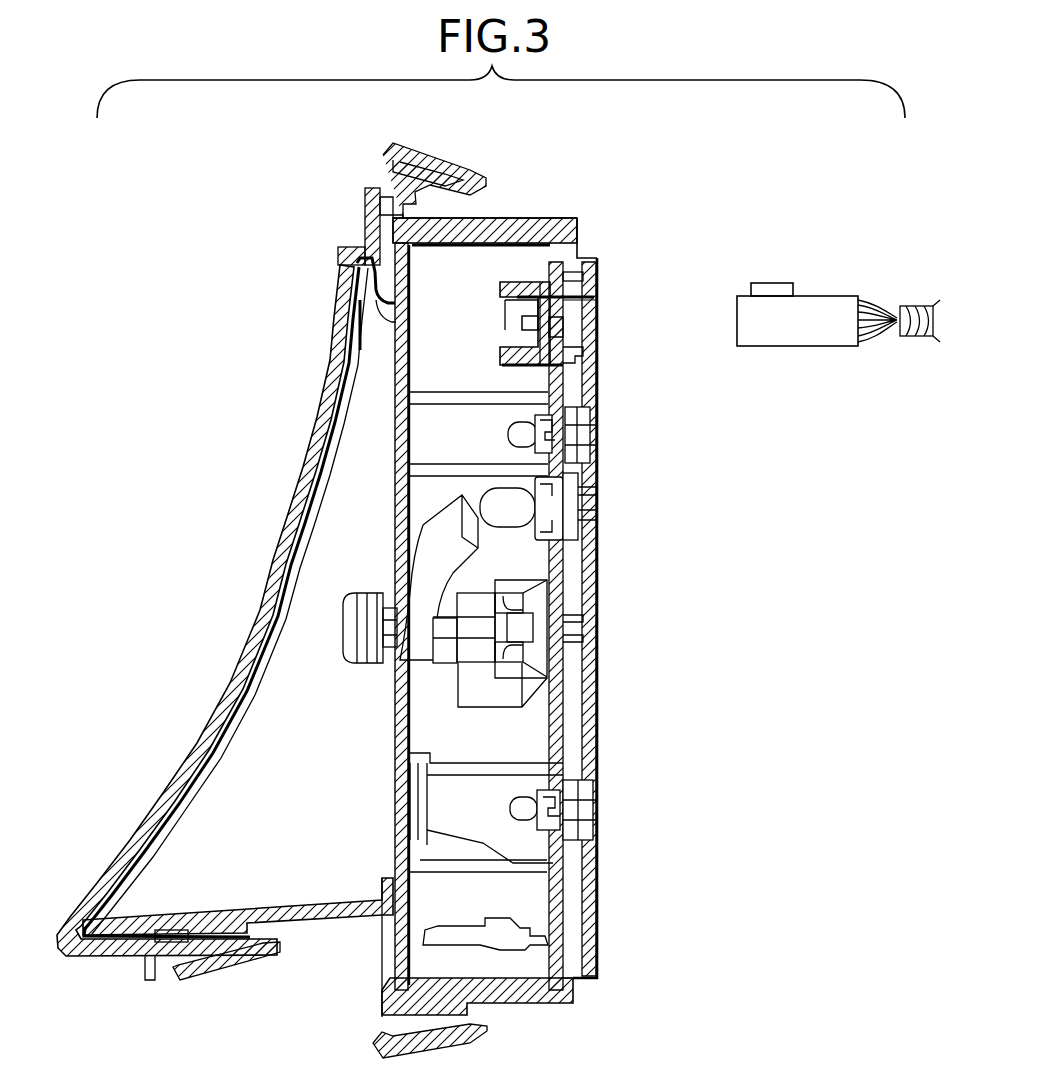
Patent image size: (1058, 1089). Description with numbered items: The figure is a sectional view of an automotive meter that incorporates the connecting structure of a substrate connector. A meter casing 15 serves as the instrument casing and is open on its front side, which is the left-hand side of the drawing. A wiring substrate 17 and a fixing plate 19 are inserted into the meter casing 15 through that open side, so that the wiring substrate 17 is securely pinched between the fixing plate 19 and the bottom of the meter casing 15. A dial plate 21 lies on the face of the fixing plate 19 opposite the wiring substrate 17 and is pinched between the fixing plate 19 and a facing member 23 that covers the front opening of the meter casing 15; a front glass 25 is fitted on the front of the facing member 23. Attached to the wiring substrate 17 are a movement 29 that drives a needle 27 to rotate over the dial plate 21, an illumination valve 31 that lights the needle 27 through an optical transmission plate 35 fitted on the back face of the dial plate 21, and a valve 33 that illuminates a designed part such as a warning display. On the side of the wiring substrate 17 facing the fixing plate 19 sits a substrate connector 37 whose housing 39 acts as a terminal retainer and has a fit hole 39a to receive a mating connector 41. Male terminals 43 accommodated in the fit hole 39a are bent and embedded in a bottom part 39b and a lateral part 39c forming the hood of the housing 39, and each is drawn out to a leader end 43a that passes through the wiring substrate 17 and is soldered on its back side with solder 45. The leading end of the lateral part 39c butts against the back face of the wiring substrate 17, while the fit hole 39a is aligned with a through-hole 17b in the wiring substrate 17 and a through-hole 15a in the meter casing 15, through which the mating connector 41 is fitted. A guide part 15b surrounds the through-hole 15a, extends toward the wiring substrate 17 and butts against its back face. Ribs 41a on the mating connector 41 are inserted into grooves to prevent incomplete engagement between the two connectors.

The meter casing 15 is at (597, 583).
The through-hole 15a is at (597, 300).
The guide part 15b is at (597, 312).
The wiring substrate 17 is at (578, 240).
The through-hole 17b is at (563, 327).
The fixing plate 19 is at (538, 240).
The dial plate 21 is at (400, 490).
The facing member 23 is at (314, 918).
The front glass 25 is at (236, 668).
The needle 27 is at (347, 626).
The movement 29 is at (530, 703).
The illumination valve 31 is at (525, 508).
The valve 33 is at (522, 817).
The optical transmission plate 35 is at (445, 522).
The substrate connector 37 is at (530, 271).
The housing 39 is at (498, 282).
The fit hole 39a is at (527, 310).
The bottom part 39b is at (517, 288).
The lateral part 39c is at (517, 373).
The mating connector 41 is at (838, 296).
The ribs 41a is at (786, 283).
The male terminal 43 is at (517, 350).
The leader end 43a is at (565, 372).
The solder 45 is at (575, 402).